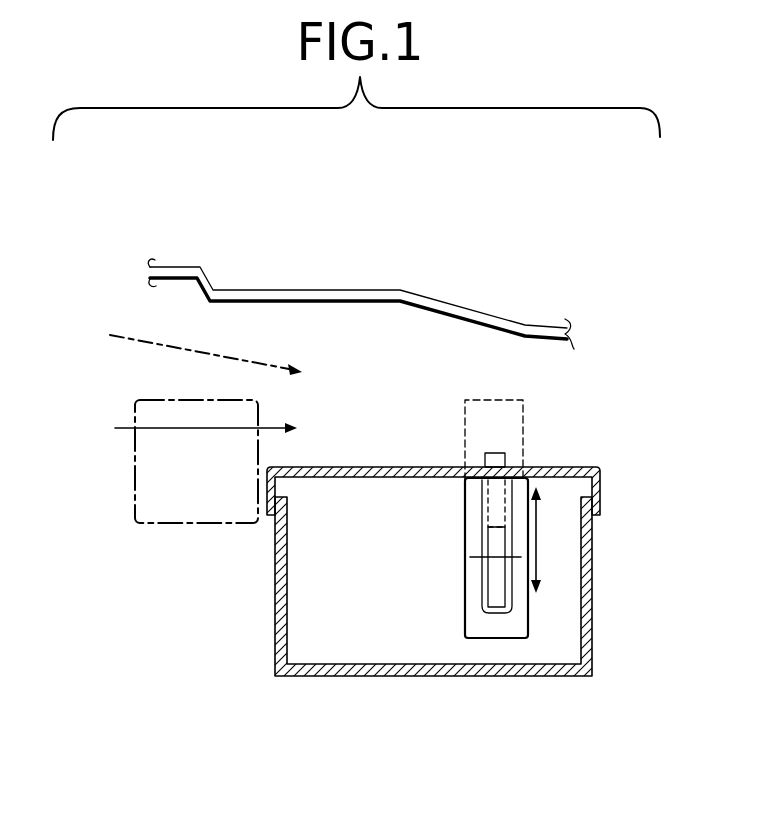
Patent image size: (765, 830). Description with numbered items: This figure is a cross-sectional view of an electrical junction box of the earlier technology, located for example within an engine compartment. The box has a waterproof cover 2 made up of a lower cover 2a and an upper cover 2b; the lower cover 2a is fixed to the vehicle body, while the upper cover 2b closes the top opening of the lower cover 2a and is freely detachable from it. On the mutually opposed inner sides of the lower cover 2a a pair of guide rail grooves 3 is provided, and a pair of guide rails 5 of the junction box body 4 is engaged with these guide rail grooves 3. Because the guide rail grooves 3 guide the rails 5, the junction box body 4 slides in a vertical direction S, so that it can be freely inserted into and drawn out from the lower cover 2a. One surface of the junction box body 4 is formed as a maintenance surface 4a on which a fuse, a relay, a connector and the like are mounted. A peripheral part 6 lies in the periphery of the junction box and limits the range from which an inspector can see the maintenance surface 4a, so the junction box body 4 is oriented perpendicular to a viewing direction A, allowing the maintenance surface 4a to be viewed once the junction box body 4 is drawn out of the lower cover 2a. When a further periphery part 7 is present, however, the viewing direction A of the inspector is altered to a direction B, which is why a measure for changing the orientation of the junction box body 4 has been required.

The waterproof cover 2 is at (376, 576).
The lower cover 2a is at (530, 677).
The upper cover 2b is at (575, 466).
The guide rail grooves 3 is at (512, 603).
The junction box body 4 is at (510, 400).
The maintenance surface 4a is at (465, 430).
The guide rails 5 is at (492, 596).
The peripheral part 6 is at (326, 289).
The periphery part 7 is at (172, 524).
The viewing direction A is at (170, 428).
The direction B is at (193, 350).
The vertical direction S is at (539, 537).